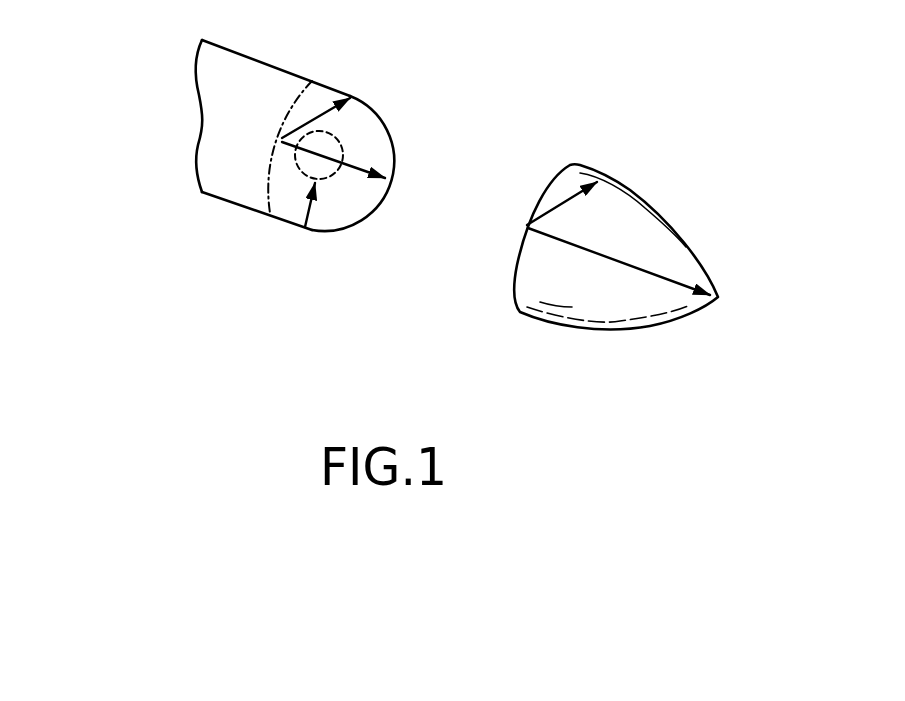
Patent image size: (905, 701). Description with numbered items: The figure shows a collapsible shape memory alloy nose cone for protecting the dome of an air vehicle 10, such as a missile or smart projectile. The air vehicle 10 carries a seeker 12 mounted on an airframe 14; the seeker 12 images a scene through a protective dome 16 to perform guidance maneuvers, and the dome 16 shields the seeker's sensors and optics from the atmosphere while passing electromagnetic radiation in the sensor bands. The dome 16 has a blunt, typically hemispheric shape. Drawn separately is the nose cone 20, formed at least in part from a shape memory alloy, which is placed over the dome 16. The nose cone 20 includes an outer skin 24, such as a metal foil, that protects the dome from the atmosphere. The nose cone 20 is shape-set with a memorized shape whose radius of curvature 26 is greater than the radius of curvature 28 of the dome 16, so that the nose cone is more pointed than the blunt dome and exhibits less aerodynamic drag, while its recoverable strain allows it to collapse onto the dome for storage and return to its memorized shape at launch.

The air vehicle 10 is at (254, 159).
The seeker 12 is at (305, 226).
The airframe 14 is at (220, 139).
The protective dome 16 is at (365, 102).
The nose cone 20 is at (654, 247).
The outer skin 24 is at (603, 315).
The radius of curvature of the nose cone 26 is at (641, 273).
The radius of curvature of the sensor dome 28 is at (350, 176).